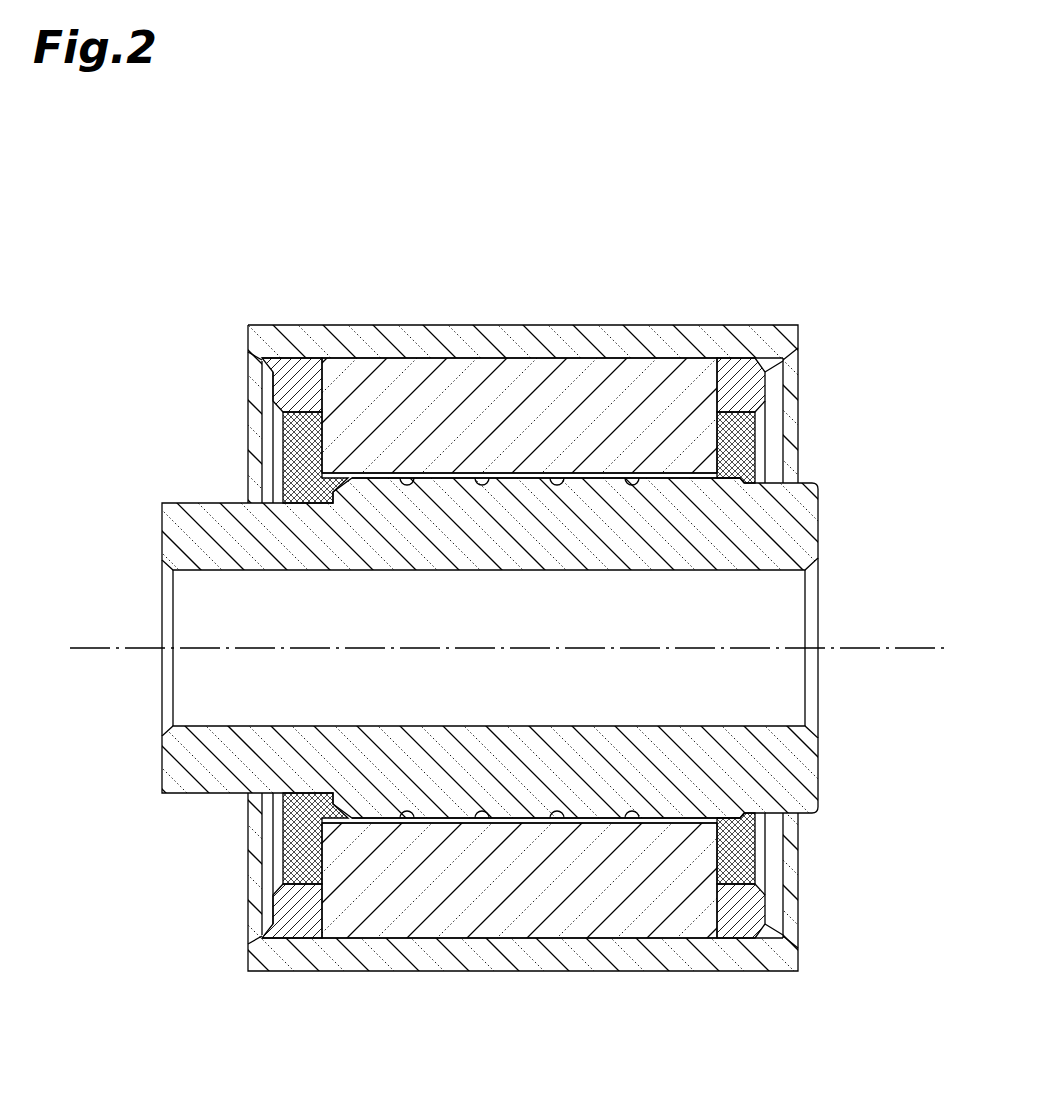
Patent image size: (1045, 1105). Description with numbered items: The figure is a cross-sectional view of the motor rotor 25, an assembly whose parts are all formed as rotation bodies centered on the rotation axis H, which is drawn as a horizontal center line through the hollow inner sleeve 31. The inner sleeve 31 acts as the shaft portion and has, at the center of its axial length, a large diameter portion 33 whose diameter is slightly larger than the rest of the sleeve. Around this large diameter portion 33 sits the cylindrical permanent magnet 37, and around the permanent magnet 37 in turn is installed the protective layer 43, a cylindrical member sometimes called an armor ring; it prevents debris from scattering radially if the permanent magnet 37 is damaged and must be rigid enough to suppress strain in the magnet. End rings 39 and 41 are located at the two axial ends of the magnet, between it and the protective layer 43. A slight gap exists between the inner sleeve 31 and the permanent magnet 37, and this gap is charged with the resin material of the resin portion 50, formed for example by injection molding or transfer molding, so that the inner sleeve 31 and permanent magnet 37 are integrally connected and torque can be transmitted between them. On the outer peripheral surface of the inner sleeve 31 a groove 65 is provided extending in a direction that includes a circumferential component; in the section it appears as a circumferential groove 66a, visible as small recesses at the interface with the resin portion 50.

The motor rotor 25 is at (773, 222).
The inner sleeve 31 is at (176, 525).
The large diameter portion 33 is at (453, 806).
The permanent magnet 37 is at (593, 380).
The end ring 39 is at (292, 388).
The end ring 41 is at (750, 384).
The protective layer 43 is at (497, 343).
The resin portion 50 is at (582, 823).
The groove 65 is at (488, 518).
The circumferential groove 66a is at (407, 480).
The rotation axis H is at (918, 648).